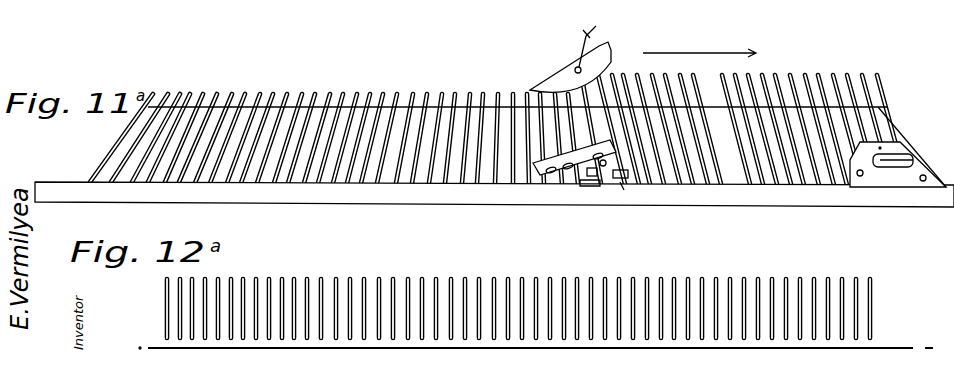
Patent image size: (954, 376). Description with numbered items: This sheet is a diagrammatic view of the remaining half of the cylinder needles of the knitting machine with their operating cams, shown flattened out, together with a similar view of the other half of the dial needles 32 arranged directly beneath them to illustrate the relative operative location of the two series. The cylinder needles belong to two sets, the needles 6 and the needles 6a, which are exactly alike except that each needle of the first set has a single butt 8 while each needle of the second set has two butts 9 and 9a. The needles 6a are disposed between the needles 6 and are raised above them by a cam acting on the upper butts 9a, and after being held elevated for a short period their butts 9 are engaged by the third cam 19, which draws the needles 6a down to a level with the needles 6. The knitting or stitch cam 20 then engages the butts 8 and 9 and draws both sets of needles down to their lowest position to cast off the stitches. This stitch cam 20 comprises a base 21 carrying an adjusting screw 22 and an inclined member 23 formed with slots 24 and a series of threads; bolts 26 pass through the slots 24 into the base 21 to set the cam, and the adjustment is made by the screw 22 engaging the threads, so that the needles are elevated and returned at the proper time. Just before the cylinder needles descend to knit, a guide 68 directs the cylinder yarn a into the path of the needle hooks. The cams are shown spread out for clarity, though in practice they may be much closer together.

In FIG. 11A, the cylinder needles 6 is at (833, 75).
In FIG. 11A, the cylinder needles 6a is at (863, 77).
In FIG. 11A, the single butt 8 is at (712, 165).
In FIG. 11A, the butt 9 is at (750, 167).
In FIG. 11A, the upper butt 9a is at (755, 147).
In FIG. 11A, the third cam 19 is at (887, 143).
In FIG. 11A, the knitting or stitch cam 20 is at (573, 168).
In FIG. 11A, the base 21 is at (607, 180).
In FIG. 11A, the adjusting screw 22 is at (613, 168).
In FIG. 11A, the inclined member 23 is at (600, 176).
In FIG. 11A, the slots 24 is at (557, 173).
In FIG. 11A, the bolts 26 is at (493, 228).
In FIG. 12A, the dial needles 32 is at (372, 273).
In FIG. 11A, the guide 68 is at (574, 67).
In FIG. 11A, the cylinder yarn a is at (600, 25).